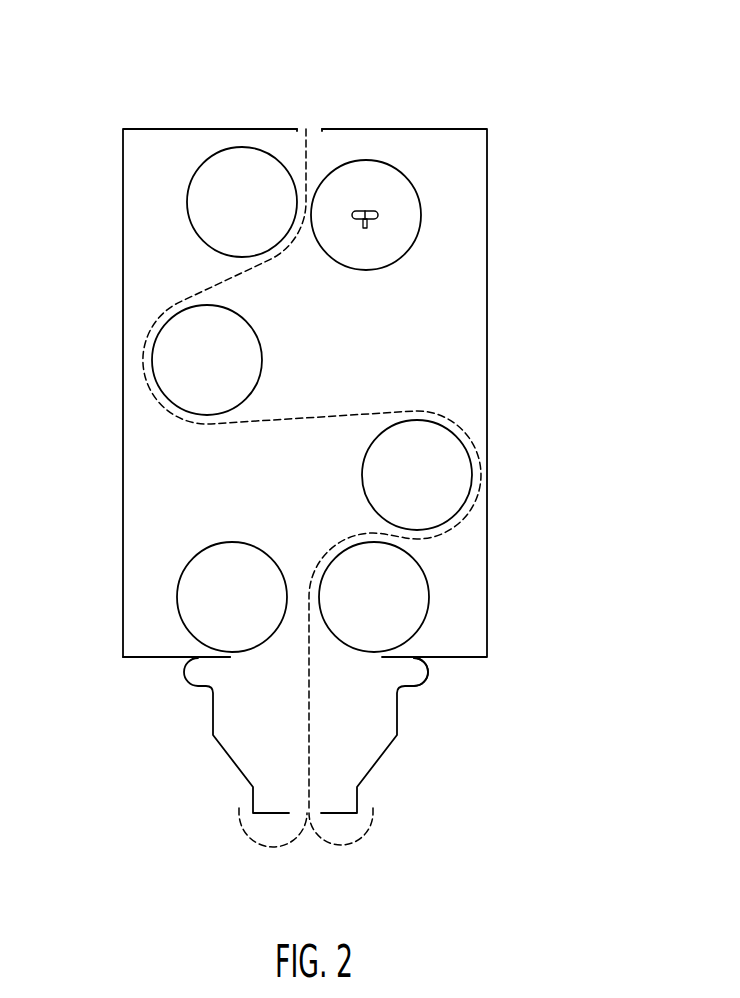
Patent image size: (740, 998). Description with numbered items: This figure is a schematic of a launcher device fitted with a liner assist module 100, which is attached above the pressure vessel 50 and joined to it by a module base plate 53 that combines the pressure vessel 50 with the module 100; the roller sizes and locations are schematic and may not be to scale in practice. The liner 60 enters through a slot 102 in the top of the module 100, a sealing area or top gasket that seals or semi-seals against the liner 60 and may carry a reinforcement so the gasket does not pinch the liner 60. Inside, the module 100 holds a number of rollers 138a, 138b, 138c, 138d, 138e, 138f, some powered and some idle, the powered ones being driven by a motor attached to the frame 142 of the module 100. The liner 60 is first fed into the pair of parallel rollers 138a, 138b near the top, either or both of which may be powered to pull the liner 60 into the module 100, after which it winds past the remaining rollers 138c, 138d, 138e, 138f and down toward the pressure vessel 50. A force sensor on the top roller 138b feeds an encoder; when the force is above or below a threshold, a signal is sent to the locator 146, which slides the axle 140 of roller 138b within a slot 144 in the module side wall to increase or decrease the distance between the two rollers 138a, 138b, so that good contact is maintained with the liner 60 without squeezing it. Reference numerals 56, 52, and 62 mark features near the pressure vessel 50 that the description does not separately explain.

The liner assist module 100 is at (520, 95).
The slot 102 is at (299, 129).
The liner 60 is at (304, 129).
The axle 140 is at (364, 212).
The slot 144 is at (376, 210).
The locator 146 is at (368, 224).
The frame 142 is at (458, 323).
The roller 138a is at (200, 199).
The roller 138b is at (400, 204).
The roller 138c is at (167, 363).
The roller 138d is at (447, 488).
The roller 138e is at (200, 607).
The roller 138f is at (407, 608).
The module base plate 53 is at (155, 660).
The notch 56 is at (410, 673).
The pressure vessel 50 is at (360, 762).
The fold line 52 is at (272, 815).
The fold line 62 is at (358, 837).